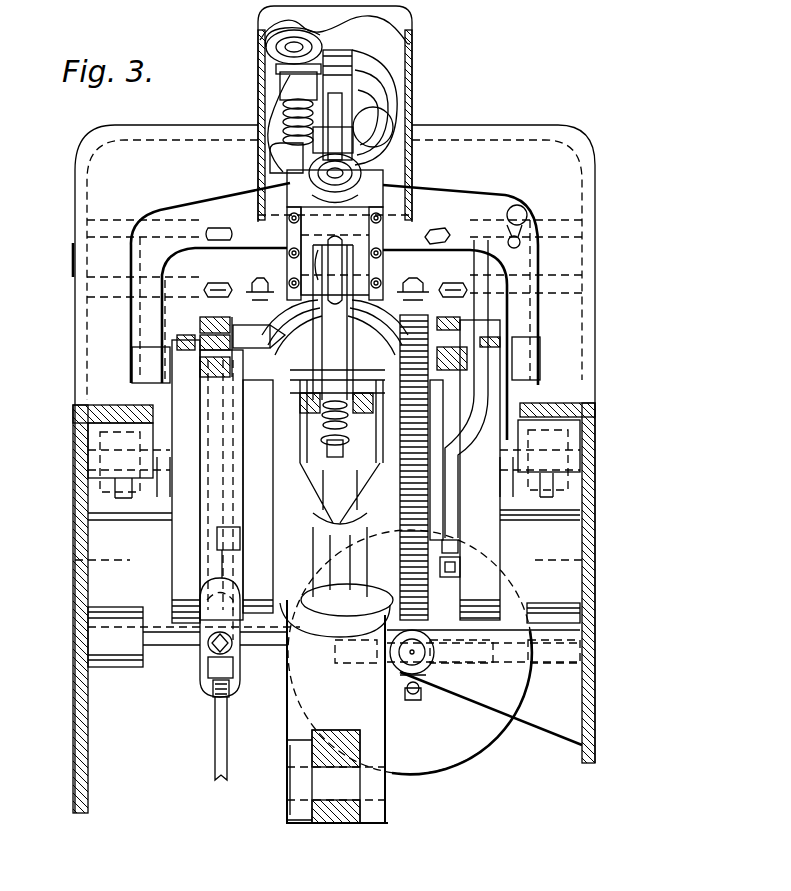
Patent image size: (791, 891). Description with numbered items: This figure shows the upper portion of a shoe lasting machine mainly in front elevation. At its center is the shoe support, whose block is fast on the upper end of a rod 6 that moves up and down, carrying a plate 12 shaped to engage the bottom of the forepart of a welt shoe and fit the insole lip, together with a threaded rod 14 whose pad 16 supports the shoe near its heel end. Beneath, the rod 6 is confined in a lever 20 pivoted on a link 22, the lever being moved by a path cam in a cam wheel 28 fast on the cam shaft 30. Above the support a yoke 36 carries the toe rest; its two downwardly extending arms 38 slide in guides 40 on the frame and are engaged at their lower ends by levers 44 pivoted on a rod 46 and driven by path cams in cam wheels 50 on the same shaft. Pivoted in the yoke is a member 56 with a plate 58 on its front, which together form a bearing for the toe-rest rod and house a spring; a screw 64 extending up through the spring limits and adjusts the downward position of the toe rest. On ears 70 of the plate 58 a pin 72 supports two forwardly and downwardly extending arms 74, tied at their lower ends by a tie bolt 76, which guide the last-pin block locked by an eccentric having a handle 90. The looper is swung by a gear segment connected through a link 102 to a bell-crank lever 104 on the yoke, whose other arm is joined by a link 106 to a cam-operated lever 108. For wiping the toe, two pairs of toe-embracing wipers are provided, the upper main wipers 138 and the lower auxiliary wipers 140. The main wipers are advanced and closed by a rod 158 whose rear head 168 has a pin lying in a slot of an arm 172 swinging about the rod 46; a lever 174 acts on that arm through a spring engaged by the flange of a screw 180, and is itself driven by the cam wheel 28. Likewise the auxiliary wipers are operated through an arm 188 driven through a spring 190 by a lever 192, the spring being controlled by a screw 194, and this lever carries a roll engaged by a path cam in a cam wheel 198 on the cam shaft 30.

The rod 6 is at (332, 583).
The plate 12 is at (280, 400).
The rod 14 is at (352, 358).
The pad 16 is at (325, 418).
The lever 20 is at (298, 747).
The link 22 is at (345, 813).
The cam wheel 28 is at (400, 487).
The cam shaft 30 is at (568, 494).
The yoke 36 is at (445, 203).
The arms 38 is at (132, 267).
The guides 40 is at (130, 384).
The levers 44 is at (78, 430).
The rod 46 is at (555, 233).
The cam wheels 50 is at (183, 567).
The member 56 is at (298, 190).
The plate 58 is at (372, 242).
The screw 64 is at (357, 173).
The ears 70 is at (335, 245).
The pin 72 is at (262, 274).
The arms 74 is at (300, 372).
The tie bolt 76 is at (345, 418).
The handle 90 is at (345, 250).
The link 102 is at (417, 240).
The bell-crank lever 104 is at (517, 210).
The link 106 is at (480, 266).
The lever 108 is at (462, 572).
The main wipers 138 is at (273, 323).
The auxiliary wipers 140 is at (290, 352).
The rod 158 is at (342, 110).
The head 168 is at (347, 70).
The arm 172 is at (372, 97).
The lever 174 is at (383, 157).
The screw 180 is at (380, 67).
The arm 188 is at (293, 152).
The spring 190 is at (287, 123).
The lever 192 is at (298, 87).
The screw 194 is at (293, 33).
The cam wheel 198 is at (262, 640).